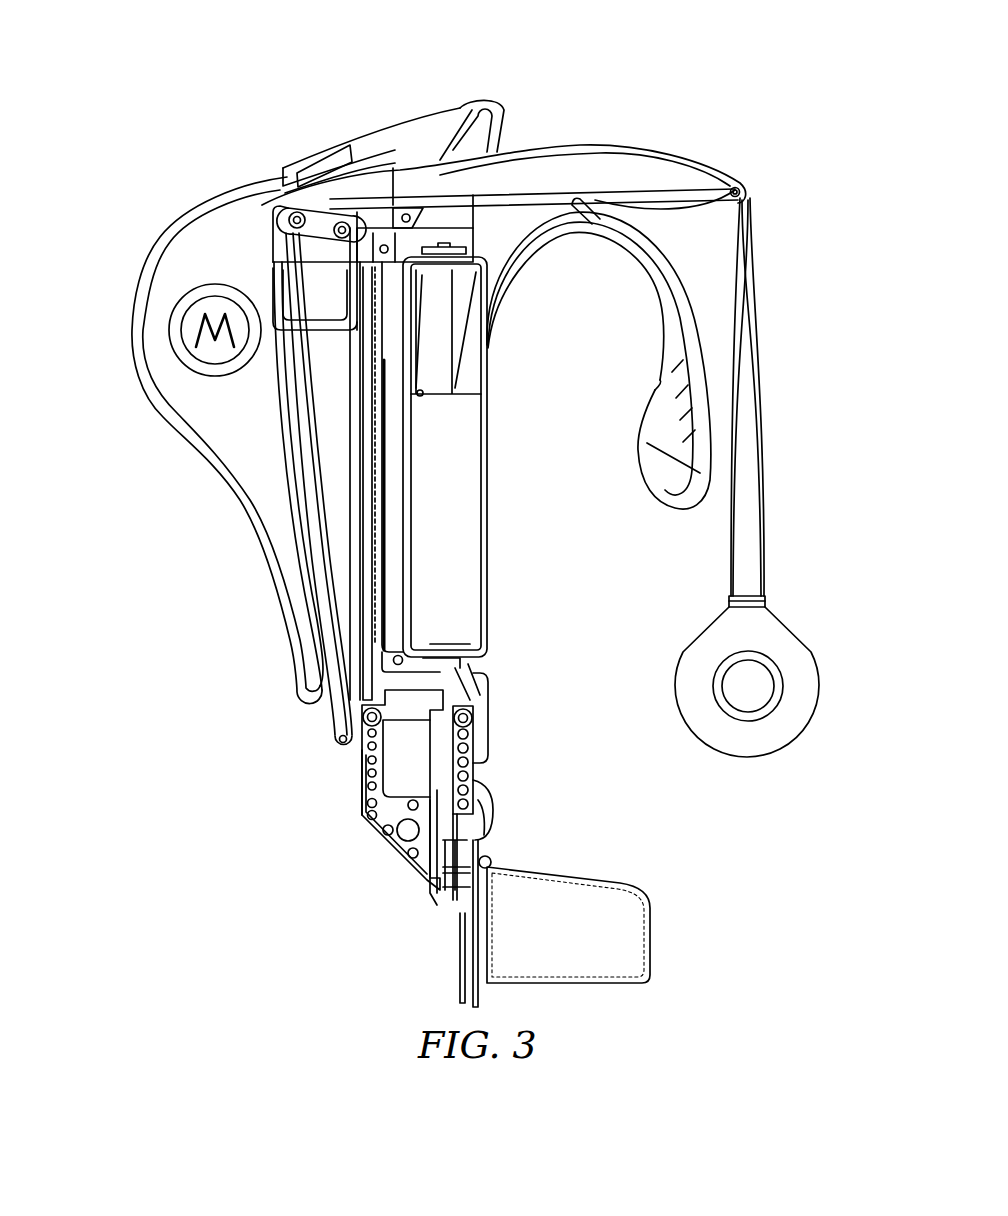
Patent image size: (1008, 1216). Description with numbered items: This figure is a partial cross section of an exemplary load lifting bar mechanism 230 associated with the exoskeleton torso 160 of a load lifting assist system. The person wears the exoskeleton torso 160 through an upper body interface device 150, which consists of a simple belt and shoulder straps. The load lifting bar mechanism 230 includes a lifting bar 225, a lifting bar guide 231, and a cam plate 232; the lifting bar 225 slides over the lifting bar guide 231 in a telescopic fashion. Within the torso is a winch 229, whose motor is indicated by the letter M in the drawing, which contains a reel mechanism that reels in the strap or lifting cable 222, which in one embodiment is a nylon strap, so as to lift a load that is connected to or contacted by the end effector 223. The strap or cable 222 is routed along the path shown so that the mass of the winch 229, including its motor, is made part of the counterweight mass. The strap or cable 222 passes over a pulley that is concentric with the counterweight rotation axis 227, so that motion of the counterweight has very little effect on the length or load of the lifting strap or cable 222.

The load lifting bar mechanism 230 is at (590, 40).
The cam plate 232 is at (400, 120).
The lifting bar guide 231 is at (367, 178).
The lifting strap or cable 222 is at (590, 185).
The lifting bar 225 is at (698, 160).
The winch 229 is at (190, 377).
The counterweight rotation axis 227 is at (332, 750).
The end effector 223 is at (798, 658).
The exoskeleton torso 160 is at (234, 655).
The upper body interface device 150 is at (712, 905).